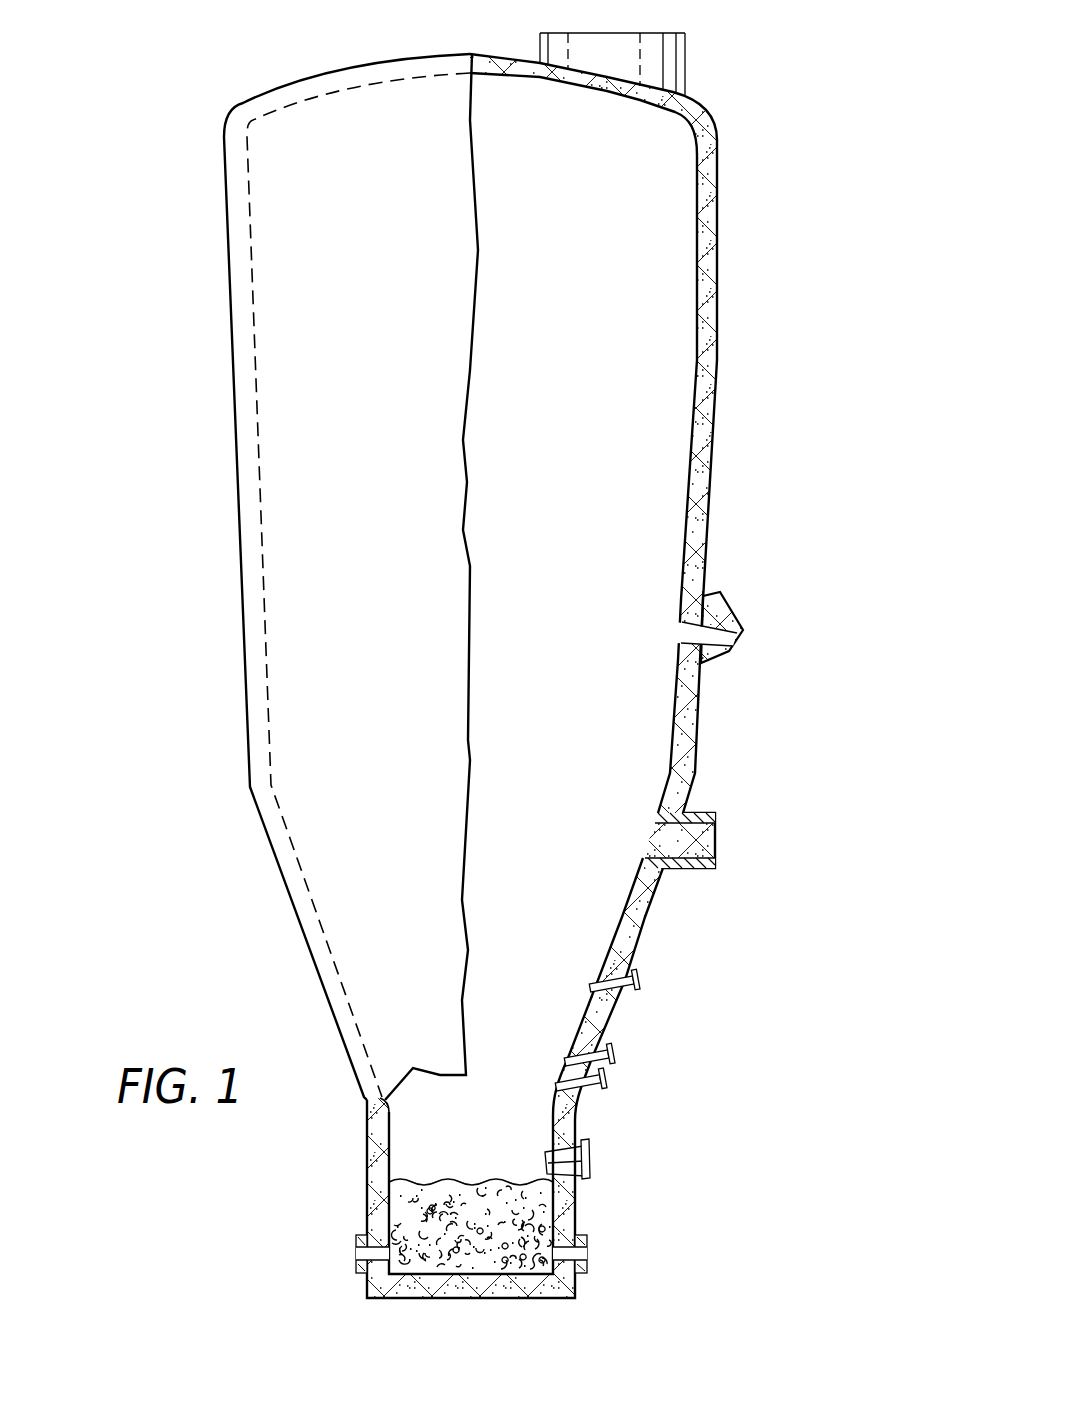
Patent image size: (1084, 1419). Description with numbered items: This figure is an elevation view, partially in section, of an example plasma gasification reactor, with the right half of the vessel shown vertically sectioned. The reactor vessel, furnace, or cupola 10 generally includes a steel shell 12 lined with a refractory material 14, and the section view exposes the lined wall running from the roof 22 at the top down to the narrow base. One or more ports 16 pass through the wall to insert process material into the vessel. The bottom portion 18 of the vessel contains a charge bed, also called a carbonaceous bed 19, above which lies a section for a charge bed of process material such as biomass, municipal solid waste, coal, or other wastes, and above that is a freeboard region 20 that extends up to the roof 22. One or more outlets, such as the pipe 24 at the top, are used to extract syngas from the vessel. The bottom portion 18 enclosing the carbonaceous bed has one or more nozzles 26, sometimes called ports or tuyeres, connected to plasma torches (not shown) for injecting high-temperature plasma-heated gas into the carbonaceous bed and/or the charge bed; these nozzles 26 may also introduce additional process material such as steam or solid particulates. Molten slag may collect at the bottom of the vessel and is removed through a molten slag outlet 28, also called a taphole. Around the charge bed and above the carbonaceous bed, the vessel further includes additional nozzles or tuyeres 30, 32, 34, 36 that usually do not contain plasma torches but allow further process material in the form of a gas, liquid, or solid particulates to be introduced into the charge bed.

The reactor vessel 10 is at (818, 198).
The steel shell 12 is at (717, 313).
The refractory material 14 is at (700, 497).
The port 16 is at (715, 840).
The bottom portion 18 is at (398, 1223).
The carbonaceous bed 19 is at (455, 1205).
The freeboard region 20 is at (513, 560).
The roof 22 is at (512, 78).
The pipe 24 is at (662, 33).
The nozzle 26 is at (591, 1160).
The molten slag outlet 28 is at (588, 1253).
The nozzle 30 is at (606, 1080).
The nozzle 32 is at (614, 1053).
The nozzle 34 is at (640, 982).
The nozzle 36 is at (738, 620).